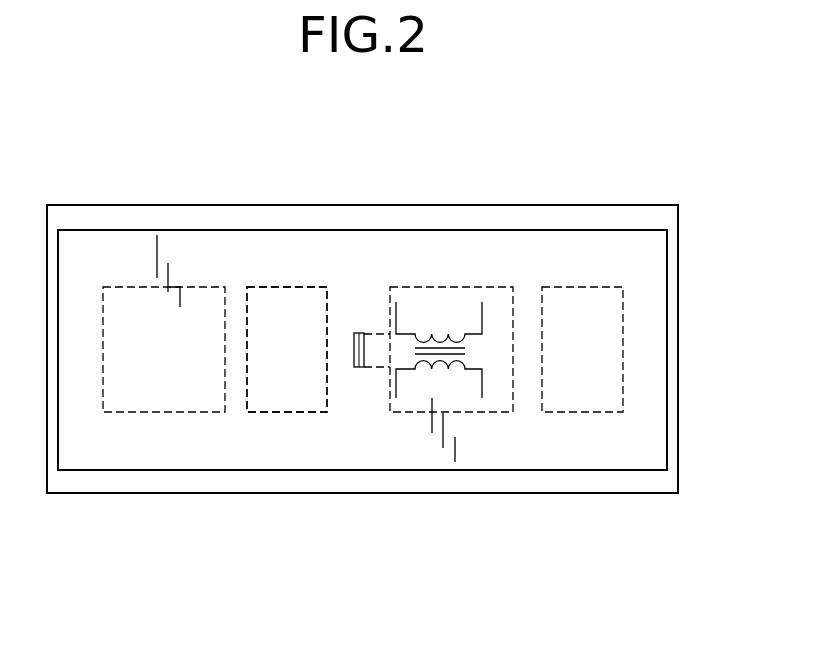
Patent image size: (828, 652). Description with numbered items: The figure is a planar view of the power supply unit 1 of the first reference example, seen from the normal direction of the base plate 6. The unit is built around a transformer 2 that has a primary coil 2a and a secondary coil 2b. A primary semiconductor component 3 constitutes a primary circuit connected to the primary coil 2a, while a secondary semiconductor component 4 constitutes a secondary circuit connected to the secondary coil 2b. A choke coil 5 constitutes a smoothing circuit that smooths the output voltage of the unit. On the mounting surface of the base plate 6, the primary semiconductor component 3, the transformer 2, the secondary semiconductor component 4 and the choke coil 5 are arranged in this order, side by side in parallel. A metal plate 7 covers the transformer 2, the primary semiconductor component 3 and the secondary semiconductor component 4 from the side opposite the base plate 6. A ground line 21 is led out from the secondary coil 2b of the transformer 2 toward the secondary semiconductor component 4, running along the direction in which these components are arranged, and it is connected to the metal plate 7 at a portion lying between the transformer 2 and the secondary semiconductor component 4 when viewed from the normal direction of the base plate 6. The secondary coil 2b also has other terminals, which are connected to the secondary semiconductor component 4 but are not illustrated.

The power supply unit 1 is at (594, 158).
The transformer 2 is at (451, 301).
The primary coil 2a is at (451, 322).
The secondary coil 2b is at (451, 379).
The ground line 21 is at (354, 349).
The primary semiconductor component 3 is at (584, 392).
The secondary semiconductor component 4 is at (280, 393).
The choke coil 5 is at (150, 393).
The base plate 6 is at (366, 481).
The metal plate 7 is at (270, 258).